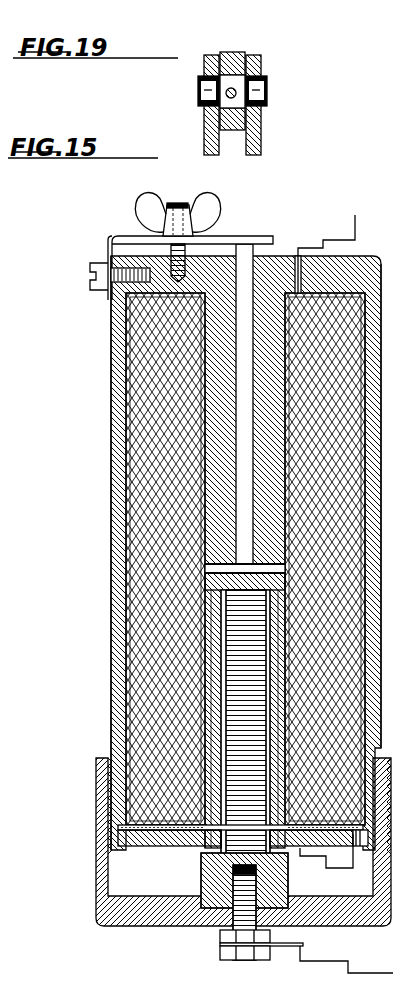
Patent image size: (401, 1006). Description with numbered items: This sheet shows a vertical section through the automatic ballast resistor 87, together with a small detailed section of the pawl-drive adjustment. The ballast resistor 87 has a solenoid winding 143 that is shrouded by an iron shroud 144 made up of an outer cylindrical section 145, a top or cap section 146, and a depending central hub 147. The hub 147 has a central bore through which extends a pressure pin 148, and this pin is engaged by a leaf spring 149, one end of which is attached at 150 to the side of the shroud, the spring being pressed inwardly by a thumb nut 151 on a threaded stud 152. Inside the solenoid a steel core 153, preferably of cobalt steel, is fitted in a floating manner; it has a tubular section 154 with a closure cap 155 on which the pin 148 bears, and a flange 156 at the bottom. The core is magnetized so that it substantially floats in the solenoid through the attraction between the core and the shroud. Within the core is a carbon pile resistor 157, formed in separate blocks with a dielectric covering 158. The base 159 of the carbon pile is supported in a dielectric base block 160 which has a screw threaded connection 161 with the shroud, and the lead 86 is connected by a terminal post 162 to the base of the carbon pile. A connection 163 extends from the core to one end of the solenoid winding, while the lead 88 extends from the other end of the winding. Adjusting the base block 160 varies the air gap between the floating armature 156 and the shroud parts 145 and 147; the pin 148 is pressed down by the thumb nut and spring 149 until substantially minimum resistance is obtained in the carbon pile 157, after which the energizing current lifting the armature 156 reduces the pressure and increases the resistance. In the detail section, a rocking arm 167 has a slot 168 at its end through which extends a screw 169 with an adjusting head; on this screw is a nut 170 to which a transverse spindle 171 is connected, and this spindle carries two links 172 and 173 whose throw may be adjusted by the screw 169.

In FIG. 15, the lead 86 is at (340, 965).
In FIG. 15, the ballast resistor 87 is at (78, 549).
In FIG. 15, the lead 88 is at (347, 221).
In FIG. 15, the solenoid winding 143 is at (137, 566).
In FIG. 15, the iron shroud 144 is at (93, 484).
In FIG. 15, the outer cylindrical section 145 is at (100, 508).
In FIG. 15, the top or cap section 146 is at (262, 256).
In FIG. 15, the depending central hub 147 is at (205, 340).
In FIG. 15, the pressure pin 148 is at (232, 305).
In FIG. 15, the leaf spring 149 is at (215, 231).
In FIG. 15, the attachment of leaf spring 150 is at (86, 262).
In FIG. 15, the thumb nut 151 is at (133, 200).
In FIG. 15, the threaded stud 152 is at (165, 246).
In FIG. 15, the steel core 153 is at (198, 693).
In FIG. 15, the tubular section 154 is at (205, 722).
In FIG. 15, the closure cap 155 is at (212, 578).
In FIG. 15, the flange 156 is at (140, 842).
In FIG. 15, the carbon pile resistor 157 is at (216, 636).
In FIG. 15, the dielectric covering 158 is at (215, 758).
In FIG. 15, the base of the carbon pile 159 is at (178, 920).
In FIG. 15, the dielectric base block 160 is at (90, 893).
In FIG. 15, the screw threaded connection 161 is at (104, 806).
In FIG. 15, the terminal post 162 is at (225, 953).
In FIG. 15, the connection 163 is at (340, 860).
In FIG. 19, the rocking arm 167 is at (217, 46).
In FIG. 19, the slot 168 is at (221, 122).
In FIG. 19, the screw 169 is at (229, 86).
In FIG. 19, the nut 170 is at (207, 103).
In FIG. 19, the transverse spindle 171 is at (197, 87).
In FIG. 19, the link 172 is at (252, 128).
In FIG. 19, the link 173 is at (197, 140).